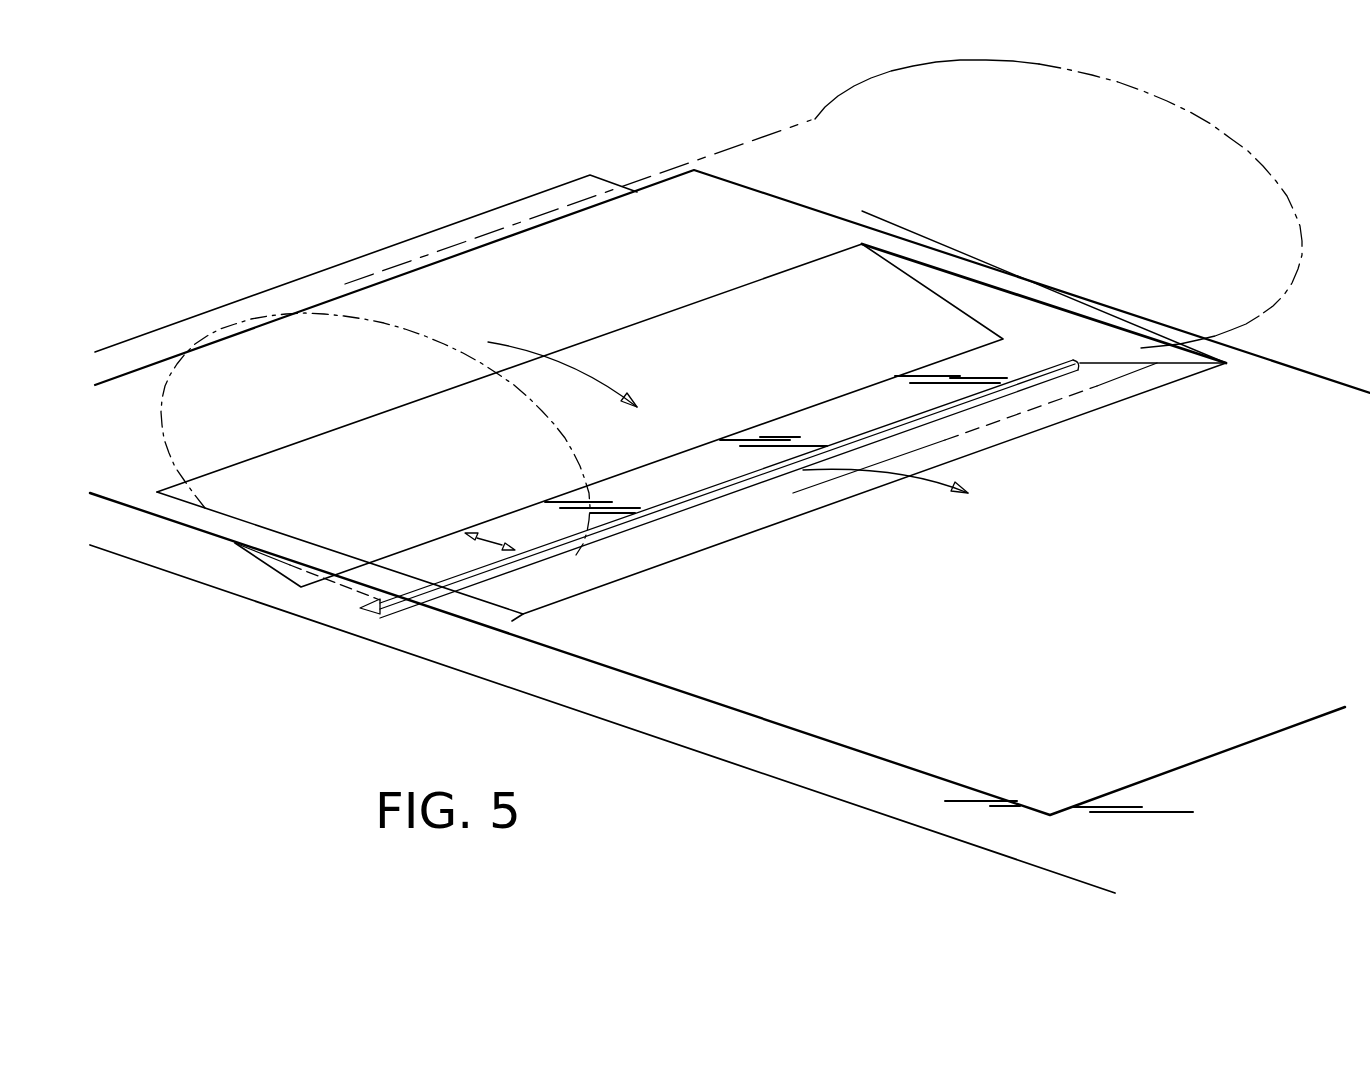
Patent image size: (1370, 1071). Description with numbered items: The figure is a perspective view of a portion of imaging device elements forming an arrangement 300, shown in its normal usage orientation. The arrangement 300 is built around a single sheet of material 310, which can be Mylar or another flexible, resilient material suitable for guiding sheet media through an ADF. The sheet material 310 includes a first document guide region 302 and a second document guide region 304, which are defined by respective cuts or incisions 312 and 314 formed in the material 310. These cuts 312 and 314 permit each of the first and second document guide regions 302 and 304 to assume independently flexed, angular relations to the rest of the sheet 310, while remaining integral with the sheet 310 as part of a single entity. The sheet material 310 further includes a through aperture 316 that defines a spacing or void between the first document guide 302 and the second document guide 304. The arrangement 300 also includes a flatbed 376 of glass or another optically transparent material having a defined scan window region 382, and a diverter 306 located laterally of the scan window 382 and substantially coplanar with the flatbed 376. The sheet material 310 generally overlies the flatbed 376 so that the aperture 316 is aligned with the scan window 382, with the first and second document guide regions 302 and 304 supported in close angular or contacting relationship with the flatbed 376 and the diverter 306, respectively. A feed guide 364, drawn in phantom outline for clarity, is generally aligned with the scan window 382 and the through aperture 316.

The arrangement 300 is at (246, 208).
The first document guide region 302 is at (280, 577).
The second document guide region 304 is at (400, 614).
The diverter 306 is at (373, 613).
The sheet of material 310 is at (531, 639).
The cut 312 is at (240, 520).
The cut 314 is at (1136, 331).
The through aperture 316 is at (437, 562).
The feed guide 364 is at (160, 432).
The flatbed 376 is at (423, 243).
The scan window region 382 is at (490, 541).